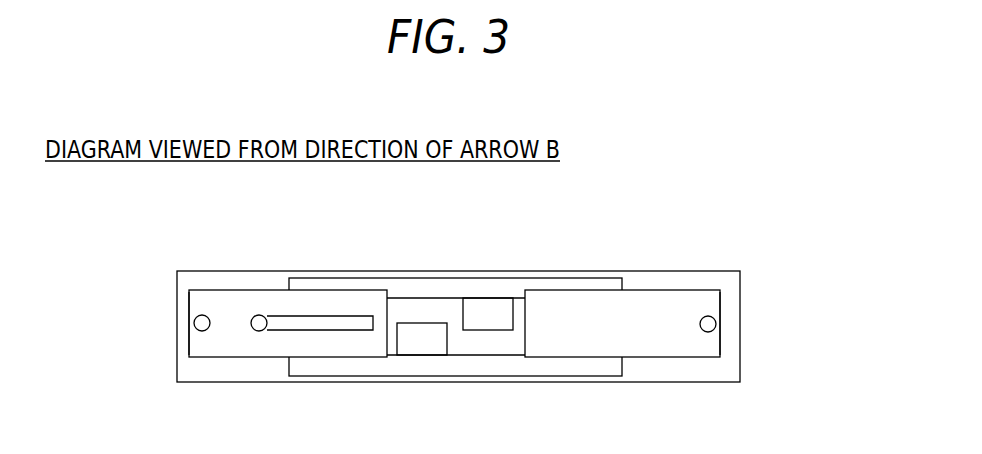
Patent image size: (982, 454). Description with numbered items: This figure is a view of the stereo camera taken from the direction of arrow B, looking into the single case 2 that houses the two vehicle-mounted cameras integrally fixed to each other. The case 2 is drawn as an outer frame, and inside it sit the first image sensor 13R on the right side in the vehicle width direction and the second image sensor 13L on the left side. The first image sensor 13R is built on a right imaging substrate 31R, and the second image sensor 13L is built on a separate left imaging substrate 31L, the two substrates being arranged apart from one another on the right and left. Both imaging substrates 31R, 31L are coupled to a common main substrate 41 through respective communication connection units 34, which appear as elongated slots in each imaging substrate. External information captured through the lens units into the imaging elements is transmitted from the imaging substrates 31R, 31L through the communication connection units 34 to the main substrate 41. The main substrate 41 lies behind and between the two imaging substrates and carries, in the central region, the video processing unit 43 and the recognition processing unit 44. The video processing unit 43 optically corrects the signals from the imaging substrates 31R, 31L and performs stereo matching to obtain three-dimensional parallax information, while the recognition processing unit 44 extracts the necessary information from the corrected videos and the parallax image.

The case 2 is at (177, 368).
The second image sensor 13L is at (186, 310).
The first image sensor 13R is at (725, 312).
The imaging substrate 31L is at (235, 298).
The imaging substrate 31R is at (667, 302).
The communication connection unit 34 is at (343, 330).
The main substrate 41 is at (455, 287).
The video processing unit 43 is at (423, 345).
The recognition processing unit 44 is at (488, 325).